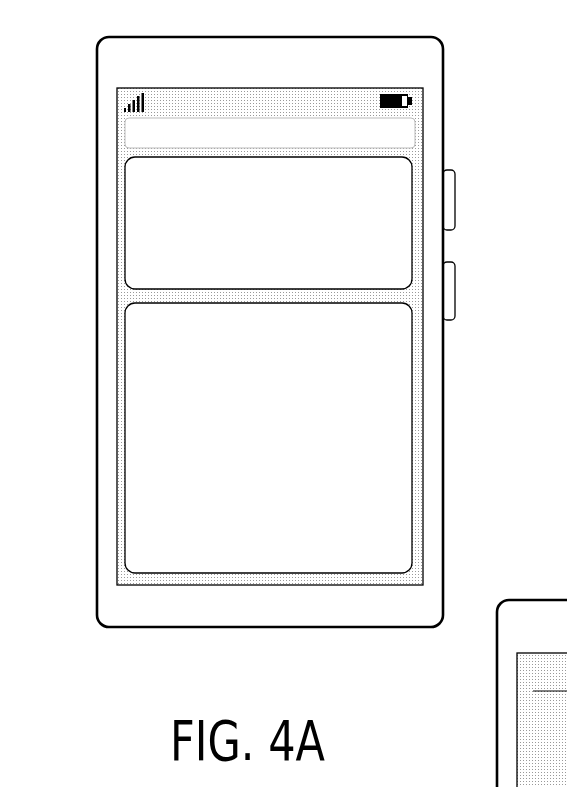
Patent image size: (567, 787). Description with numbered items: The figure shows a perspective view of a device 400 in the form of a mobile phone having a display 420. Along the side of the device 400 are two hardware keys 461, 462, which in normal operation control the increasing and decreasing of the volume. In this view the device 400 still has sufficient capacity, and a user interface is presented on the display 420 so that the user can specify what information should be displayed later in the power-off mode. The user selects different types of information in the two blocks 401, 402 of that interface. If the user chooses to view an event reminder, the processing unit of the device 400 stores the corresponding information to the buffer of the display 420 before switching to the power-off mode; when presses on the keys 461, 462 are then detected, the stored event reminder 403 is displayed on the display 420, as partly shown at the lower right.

The device 400 is at (203, 20).
The display 420 is at (425, 551).
The block 401 is at (125, 223).
The block 402 is at (125, 428).
The event reminder 403 is at (520, 746).
The hardware key 461 is at (447, 170).
The hardware key 462 is at (448, 322).